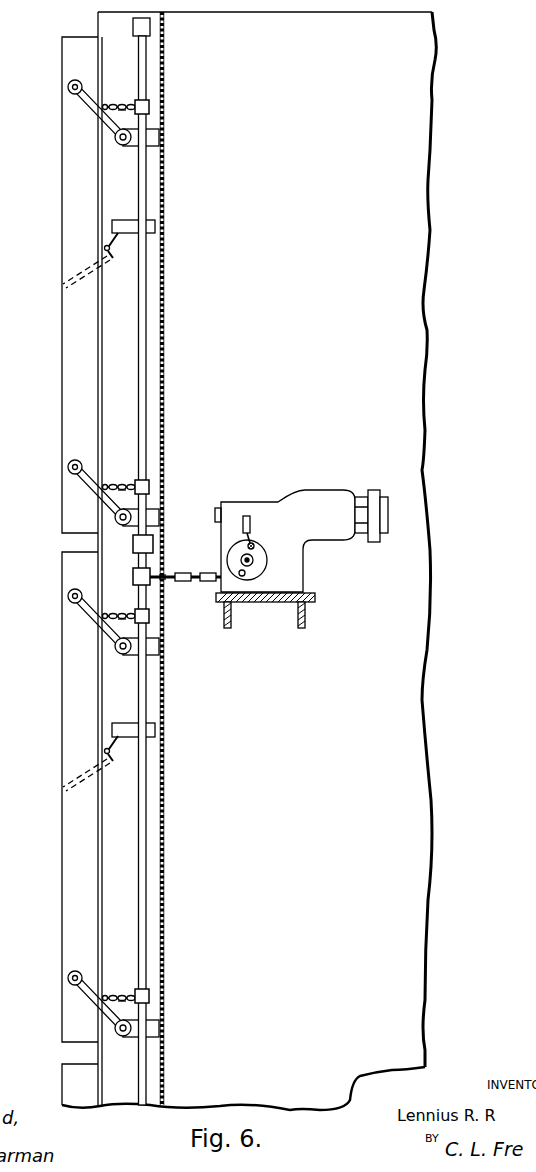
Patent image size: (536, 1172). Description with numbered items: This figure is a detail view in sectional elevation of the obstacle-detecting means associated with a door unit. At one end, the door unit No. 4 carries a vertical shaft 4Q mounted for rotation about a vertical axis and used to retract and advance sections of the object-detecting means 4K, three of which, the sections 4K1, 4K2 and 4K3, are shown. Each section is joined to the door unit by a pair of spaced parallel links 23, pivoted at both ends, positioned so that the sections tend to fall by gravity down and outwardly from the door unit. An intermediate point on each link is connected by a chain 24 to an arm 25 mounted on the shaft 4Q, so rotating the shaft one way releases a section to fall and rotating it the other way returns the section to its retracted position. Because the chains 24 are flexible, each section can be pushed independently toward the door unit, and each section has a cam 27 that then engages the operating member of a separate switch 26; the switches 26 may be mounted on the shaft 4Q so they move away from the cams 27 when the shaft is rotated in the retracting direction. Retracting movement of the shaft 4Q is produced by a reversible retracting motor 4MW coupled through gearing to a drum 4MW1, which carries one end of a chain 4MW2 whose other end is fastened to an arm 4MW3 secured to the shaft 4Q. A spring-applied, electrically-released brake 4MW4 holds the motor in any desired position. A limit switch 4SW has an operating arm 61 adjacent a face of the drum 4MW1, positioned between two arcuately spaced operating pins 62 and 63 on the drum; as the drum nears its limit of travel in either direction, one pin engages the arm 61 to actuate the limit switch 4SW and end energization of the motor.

The object-detecting means 4K is at (53, 571).
The section of object-detecting means 4K1 is at (62, 431).
The section of object-detecting means 4K2 is at (62, 677).
The section of object-detecting means 4K3 is at (66, 1076).
The door unit No. 4 is at (433, 182).
The links 23 is at (115, 136).
The chain 24 is at (130, 103).
The arm 25 is at (149, 106).
The switch 26 is at (129, 220).
The cam 27 is at (108, 259).
The vertical shaft 4Q is at (140, 325).
The retracting motor 4MW is at (333, 536).
The drum 4MW1 is at (227, 557).
The chain 4MW2 is at (201, 583).
The arm 4MW3 is at (156, 562).
The brake 4MW4 is at (378, 542).
The limit switch 4SW is at (250, 521).
The operating arm 61 is at (252, 539).
The operating pin 62 is at (254, 547).
The operating pin 63 is at (246, 576).